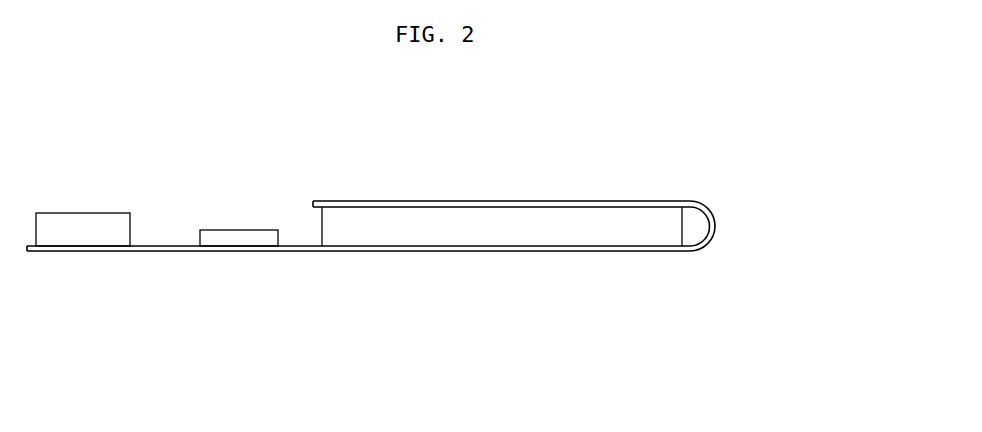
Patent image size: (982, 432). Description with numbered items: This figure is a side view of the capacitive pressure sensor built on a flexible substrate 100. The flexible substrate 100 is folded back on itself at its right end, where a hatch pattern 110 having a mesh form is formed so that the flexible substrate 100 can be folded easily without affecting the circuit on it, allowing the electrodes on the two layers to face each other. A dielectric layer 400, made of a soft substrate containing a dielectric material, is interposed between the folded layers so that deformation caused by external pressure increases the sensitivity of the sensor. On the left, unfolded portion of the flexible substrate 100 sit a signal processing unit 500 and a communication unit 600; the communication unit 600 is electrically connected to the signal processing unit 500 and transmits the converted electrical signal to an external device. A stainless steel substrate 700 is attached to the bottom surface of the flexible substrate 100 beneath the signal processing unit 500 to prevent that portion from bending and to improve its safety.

The flexible substrate 100 is at (545, 201).
The hatch pattern 110 is at (710, 212).
The dielectric layer 400 is at (487, 232).
The signal processing unit 500 is at (230, 233).
The communication unit 600 is at (79, 220).
The stainless steel substrate 700 is at (158, 252).